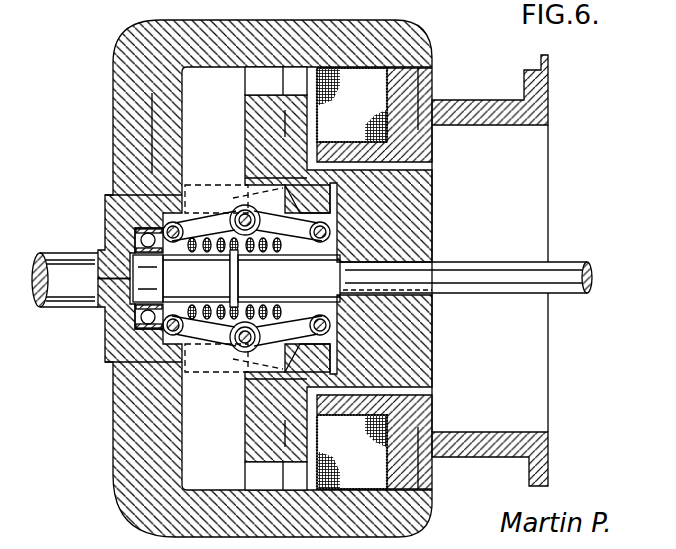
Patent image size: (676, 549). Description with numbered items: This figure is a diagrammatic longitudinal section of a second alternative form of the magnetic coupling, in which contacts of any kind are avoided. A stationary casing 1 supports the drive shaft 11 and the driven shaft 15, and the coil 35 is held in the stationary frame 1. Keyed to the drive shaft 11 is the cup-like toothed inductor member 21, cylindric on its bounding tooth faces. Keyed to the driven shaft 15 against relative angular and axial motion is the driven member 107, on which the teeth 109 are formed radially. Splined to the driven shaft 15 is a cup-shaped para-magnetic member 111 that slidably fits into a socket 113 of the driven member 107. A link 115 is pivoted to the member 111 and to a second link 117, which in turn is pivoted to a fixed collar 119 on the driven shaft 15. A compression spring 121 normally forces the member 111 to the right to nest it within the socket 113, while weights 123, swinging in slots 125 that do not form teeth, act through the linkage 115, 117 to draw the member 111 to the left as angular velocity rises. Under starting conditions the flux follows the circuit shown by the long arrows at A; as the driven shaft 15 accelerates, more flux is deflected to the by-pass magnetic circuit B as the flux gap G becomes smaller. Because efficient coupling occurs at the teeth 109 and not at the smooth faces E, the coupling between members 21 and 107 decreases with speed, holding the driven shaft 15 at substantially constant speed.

The stationary casing 1 is at (459, 107).
The drive shaft 11 is at (79, 263).
The driven shaft 15 is at (560, 268).
The inductor member 21 is at (418, 33).
The coil 35 is at (374, 85).
The driven member 107 is at (428, 218).
The teeth 109 is at (250, 82).
The para-magnetic member 111 is at (298, 252).
The socket 113 is at (340, 316).
The link 115 is at (256, 334).
The second link 117 is at (210, 333).
The fixed collar 119 is at (173, 253).
The compression spring 121 is at (249, 251).
The weights 123 is at (241, 204).
The slots 125 is at (242, 184).
The flux circuit A is at (264, 86).
The by-pass magnetic circuit B is at (144, 120).
The smooth faces E is at (427, 63).
The flux gap G is at (176, 192).